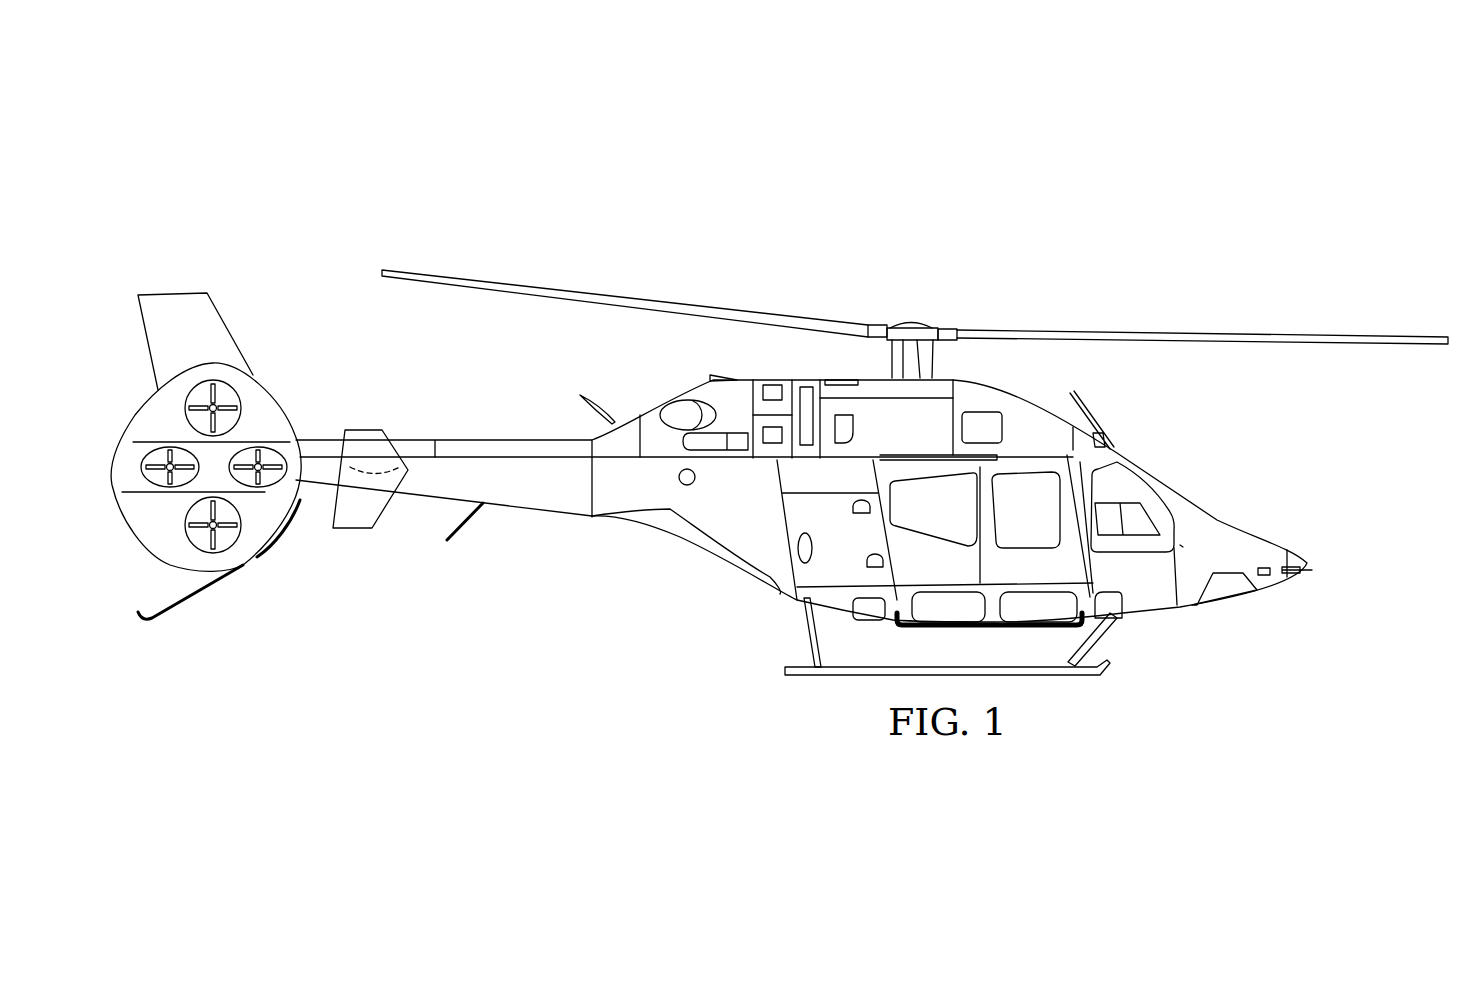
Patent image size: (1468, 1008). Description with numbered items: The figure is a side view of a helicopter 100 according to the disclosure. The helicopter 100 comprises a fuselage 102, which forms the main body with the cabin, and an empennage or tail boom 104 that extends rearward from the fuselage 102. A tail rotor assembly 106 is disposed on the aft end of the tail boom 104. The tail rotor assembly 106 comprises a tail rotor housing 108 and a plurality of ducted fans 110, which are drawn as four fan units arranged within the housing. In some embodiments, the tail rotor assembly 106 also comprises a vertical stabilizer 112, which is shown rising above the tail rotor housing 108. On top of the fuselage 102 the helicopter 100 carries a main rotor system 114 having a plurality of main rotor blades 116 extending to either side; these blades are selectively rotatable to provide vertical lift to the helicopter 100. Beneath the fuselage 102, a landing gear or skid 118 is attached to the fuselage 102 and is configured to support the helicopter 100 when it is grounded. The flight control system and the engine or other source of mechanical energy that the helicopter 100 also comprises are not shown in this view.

The helicopter 100 is at (1415, 240).
The fuselage 102 is at (1270, 538).
The tail boom 104 is at (507, 438).
The tail rotor assembly 106 is at (282, 390).
The tail rotor housing 108 is at (293, 430).
The ducted fans 110 is at (203, 370).
The vertical stabilizer 112 is at (160, 293).
The main rotor system 114 is at (929, 309).
The main rotor blades 116 is at (627, 298).
The skid 118 is at (808, 635).